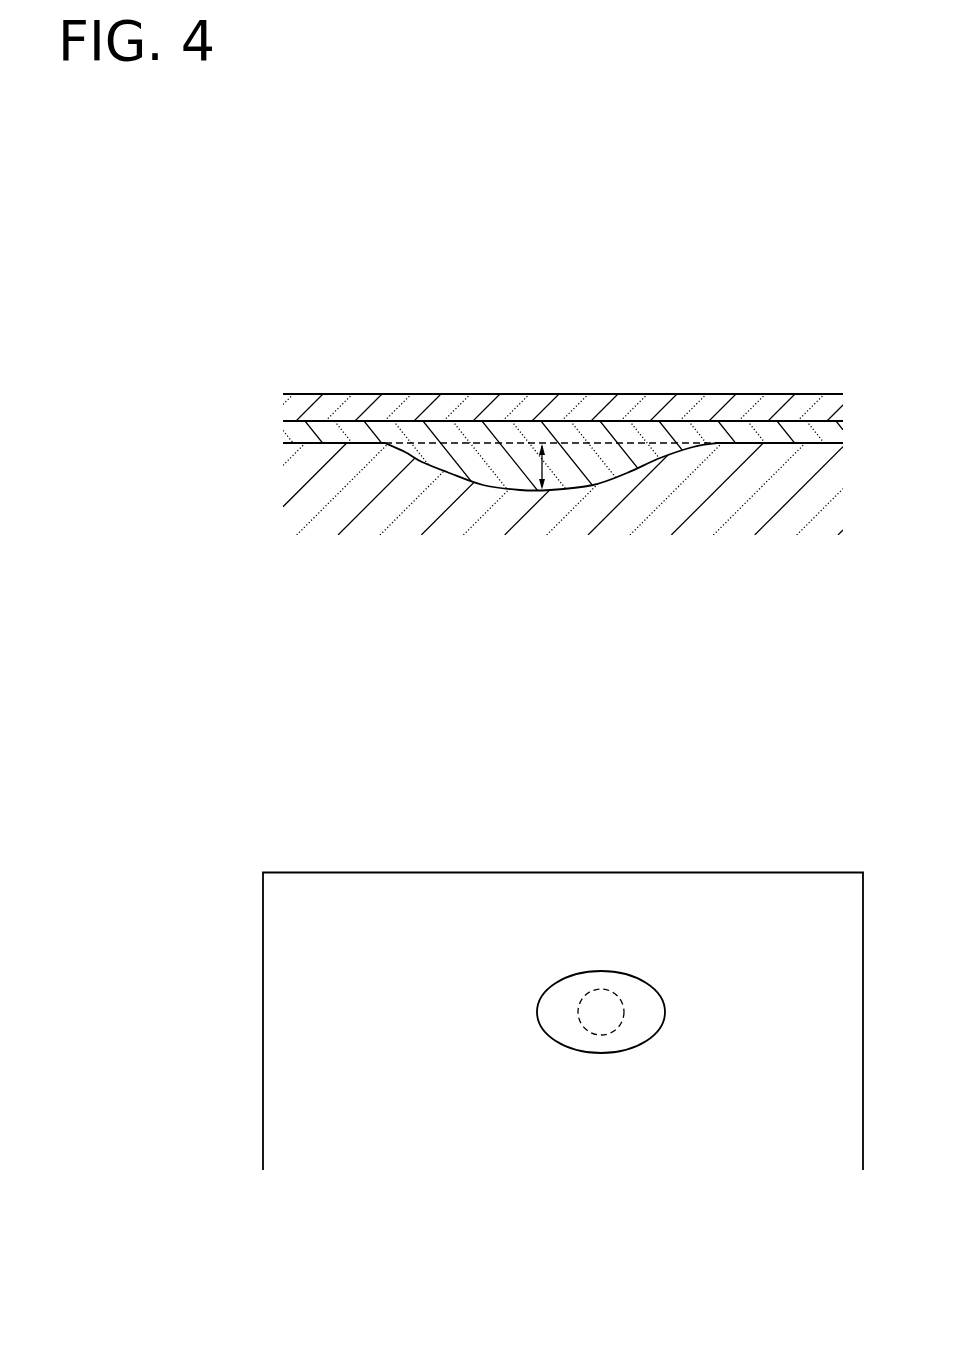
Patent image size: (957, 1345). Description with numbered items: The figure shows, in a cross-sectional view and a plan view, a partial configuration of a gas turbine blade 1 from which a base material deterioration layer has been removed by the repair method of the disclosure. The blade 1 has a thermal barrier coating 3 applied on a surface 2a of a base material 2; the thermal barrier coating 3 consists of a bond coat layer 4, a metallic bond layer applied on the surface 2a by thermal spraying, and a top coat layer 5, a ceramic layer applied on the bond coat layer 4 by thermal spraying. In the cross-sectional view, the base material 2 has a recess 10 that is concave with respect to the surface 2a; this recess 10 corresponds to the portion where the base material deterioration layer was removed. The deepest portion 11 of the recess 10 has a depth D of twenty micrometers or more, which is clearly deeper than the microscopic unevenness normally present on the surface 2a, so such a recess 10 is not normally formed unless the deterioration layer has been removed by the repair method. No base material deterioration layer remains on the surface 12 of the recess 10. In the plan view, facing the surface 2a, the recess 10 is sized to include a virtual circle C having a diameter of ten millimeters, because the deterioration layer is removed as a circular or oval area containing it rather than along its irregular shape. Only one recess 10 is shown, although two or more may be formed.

The gas turbine blade 1 is at (268, 228).
The base material 2 is at (808, 473).
The surface of base material 2a is at (731, 443).
The thermal barrier coating 3 is at (392, 282).
The bond coat layer 4 is at (373, 433).
The top coat layer 5 is at (307, 410).
The recess 10 is at (508, 449).
The deepest portion 11 is at (548, 492).
The surface of recess 12 is at (450, 475).
The depth D is at (543, 470).
The virtual circle C is at (623, 1007).